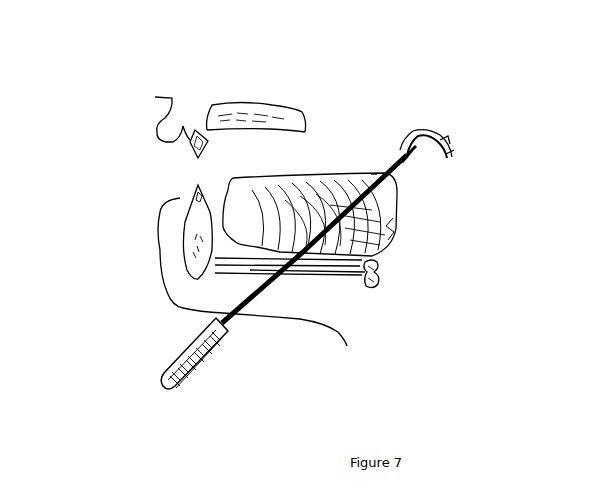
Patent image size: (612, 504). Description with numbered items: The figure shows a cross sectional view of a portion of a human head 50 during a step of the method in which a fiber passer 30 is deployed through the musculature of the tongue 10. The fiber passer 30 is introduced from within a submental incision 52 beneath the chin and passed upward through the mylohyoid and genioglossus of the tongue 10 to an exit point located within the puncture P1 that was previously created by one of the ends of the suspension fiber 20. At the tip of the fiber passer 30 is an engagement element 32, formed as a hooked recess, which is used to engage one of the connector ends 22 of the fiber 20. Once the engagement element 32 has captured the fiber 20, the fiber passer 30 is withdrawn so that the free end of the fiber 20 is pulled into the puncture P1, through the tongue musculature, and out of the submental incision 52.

The tongue 10 is at (318, 168).
The suspension fiber 20 is at (313, 215).
The connector end 22 is at (450, 151).
The fiber passer 30 is at (287, 282).
The engagement element 32 is at (404, 170).
The human head 50 is at (267, 221).
The submental incision 52 is at (222, 316).
The puncture P1 is at (374, 170).